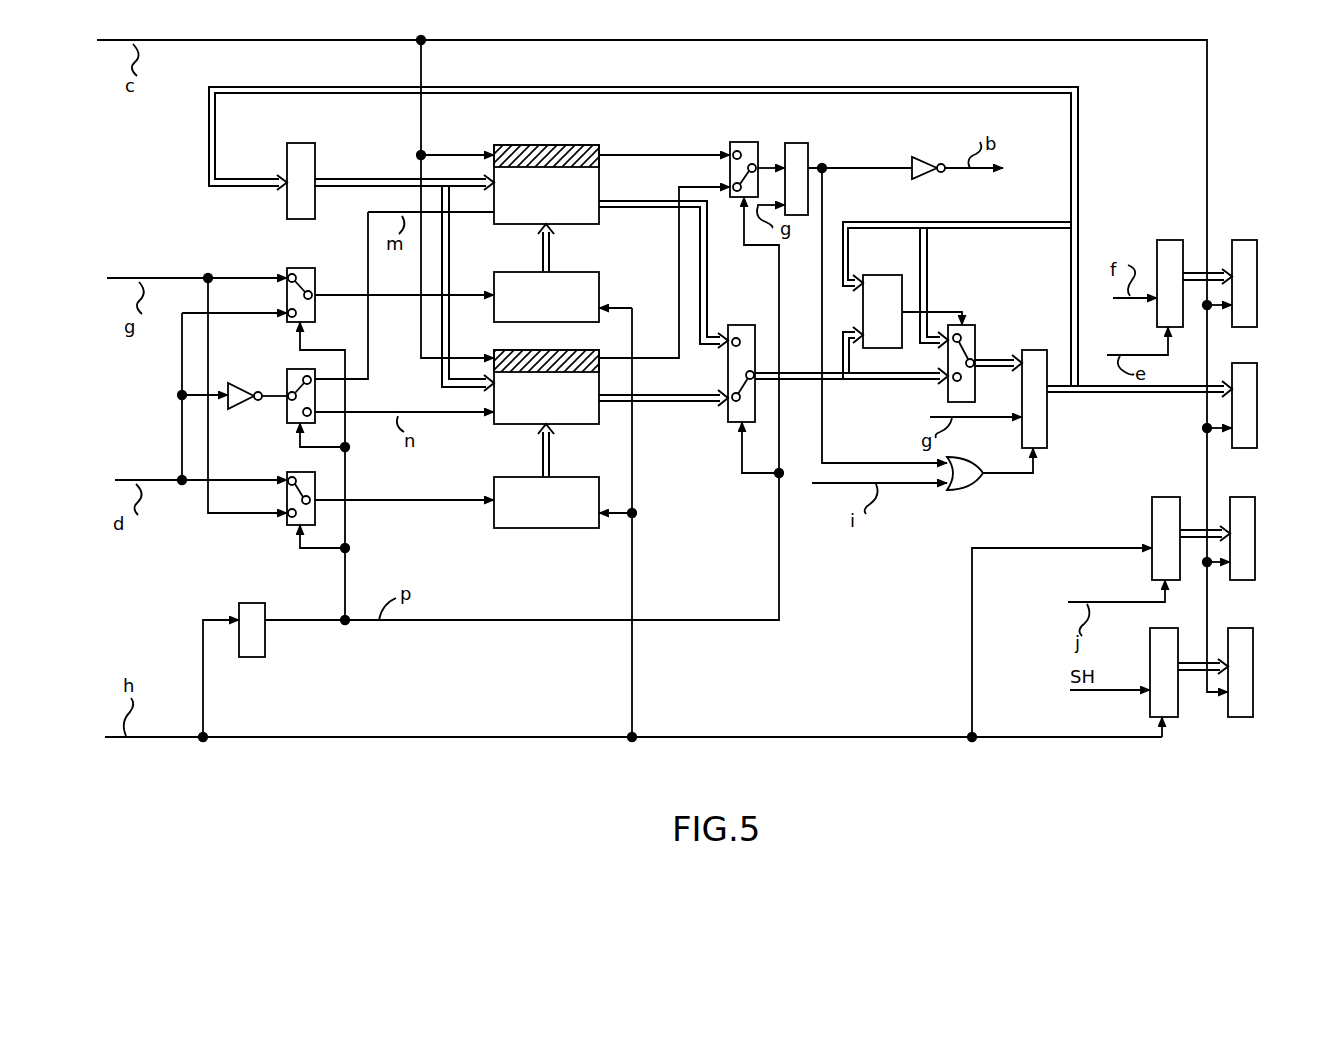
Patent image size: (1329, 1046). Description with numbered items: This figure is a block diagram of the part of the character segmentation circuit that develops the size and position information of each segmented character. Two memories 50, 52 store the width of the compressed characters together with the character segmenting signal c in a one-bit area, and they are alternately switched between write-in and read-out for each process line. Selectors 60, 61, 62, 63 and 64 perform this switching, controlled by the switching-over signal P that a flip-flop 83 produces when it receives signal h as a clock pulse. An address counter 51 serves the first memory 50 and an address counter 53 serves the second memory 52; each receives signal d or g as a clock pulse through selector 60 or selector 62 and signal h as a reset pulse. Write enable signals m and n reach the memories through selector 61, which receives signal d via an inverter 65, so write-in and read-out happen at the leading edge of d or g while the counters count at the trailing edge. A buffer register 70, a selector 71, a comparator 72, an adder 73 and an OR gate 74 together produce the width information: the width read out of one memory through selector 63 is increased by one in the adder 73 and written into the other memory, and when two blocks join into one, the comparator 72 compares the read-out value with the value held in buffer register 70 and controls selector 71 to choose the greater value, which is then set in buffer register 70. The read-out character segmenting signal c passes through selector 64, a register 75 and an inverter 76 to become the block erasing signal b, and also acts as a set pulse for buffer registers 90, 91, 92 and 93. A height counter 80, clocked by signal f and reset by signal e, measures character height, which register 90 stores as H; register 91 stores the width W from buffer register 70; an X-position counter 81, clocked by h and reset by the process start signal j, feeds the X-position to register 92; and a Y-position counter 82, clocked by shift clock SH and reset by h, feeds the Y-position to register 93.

The memory 50 is at (599, 219).
The address counter 51 is at (599, 290).
The memory 52 is at (568, 424).
The address counter 53 is at (534, 528).
The selector 60 is at (315, 270).
The selector 61 is at (297, 369).
The selector 62 is at (287, 478).
The selector 63 is at (728, 422).
The selector 64 is at (742, 142).
The inverter 65 is at (243, 383).
The buffer register 70 is at (1047, 405).
The selector 71 is at (975, 336).
The comparator 72 is at (880, 275).
The adder 73 is at (315, 148).
The OR gate 74 is at (955, 490).
The register 75 is at (805, 143).
The inverter 76 is at (927, 157).
The height counter 80 is at (1168, 240).
The X-position counter 81 is at (1168, 497).
The Y-position counter 82 is at (1150, 656).
The flip-flop 83 is at (265, 650).
The buffer register 90 is at (1246, 240).
The buffer register 91 is at (1244, 363).
The buffer register 92 is at (1243, 497).
The buffer register 93 is at (1243, 628).